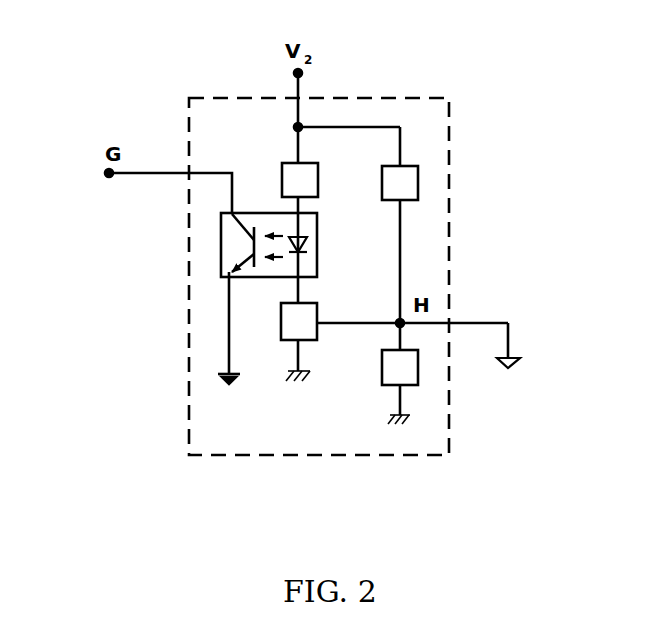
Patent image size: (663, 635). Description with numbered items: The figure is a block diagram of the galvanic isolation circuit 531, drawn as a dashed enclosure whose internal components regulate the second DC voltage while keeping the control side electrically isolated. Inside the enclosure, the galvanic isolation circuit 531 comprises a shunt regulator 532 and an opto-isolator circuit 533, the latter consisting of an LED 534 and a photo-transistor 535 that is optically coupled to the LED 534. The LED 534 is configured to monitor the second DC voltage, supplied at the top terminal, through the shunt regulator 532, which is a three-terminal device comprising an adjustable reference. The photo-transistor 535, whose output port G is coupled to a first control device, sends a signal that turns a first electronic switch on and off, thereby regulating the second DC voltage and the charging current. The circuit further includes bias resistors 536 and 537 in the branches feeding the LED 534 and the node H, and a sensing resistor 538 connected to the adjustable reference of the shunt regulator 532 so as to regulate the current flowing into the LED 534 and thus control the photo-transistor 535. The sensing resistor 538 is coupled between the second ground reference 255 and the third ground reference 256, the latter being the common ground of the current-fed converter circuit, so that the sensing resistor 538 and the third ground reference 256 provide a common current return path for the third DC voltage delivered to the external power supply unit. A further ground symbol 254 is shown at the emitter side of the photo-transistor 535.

The galvanic isolation circuit 531 is at (187, 215).
The shunt regulator 532 is at (281, 342).
The opto-isolator circuit 533 is at (322, 262).
The LED 534 is at (312, 243).
The photo-transistor 535 is at (250, 240).
The bias resistor 536 is at (282, 163).
The bias resistor 537 is at (418, 185).
The sensing resistor 538 is at (418, 368).
The ground 254 is at (220, 378).
The second ground reference 255 is at (302, 378).
The third ground reference 256 is at (520, 363).